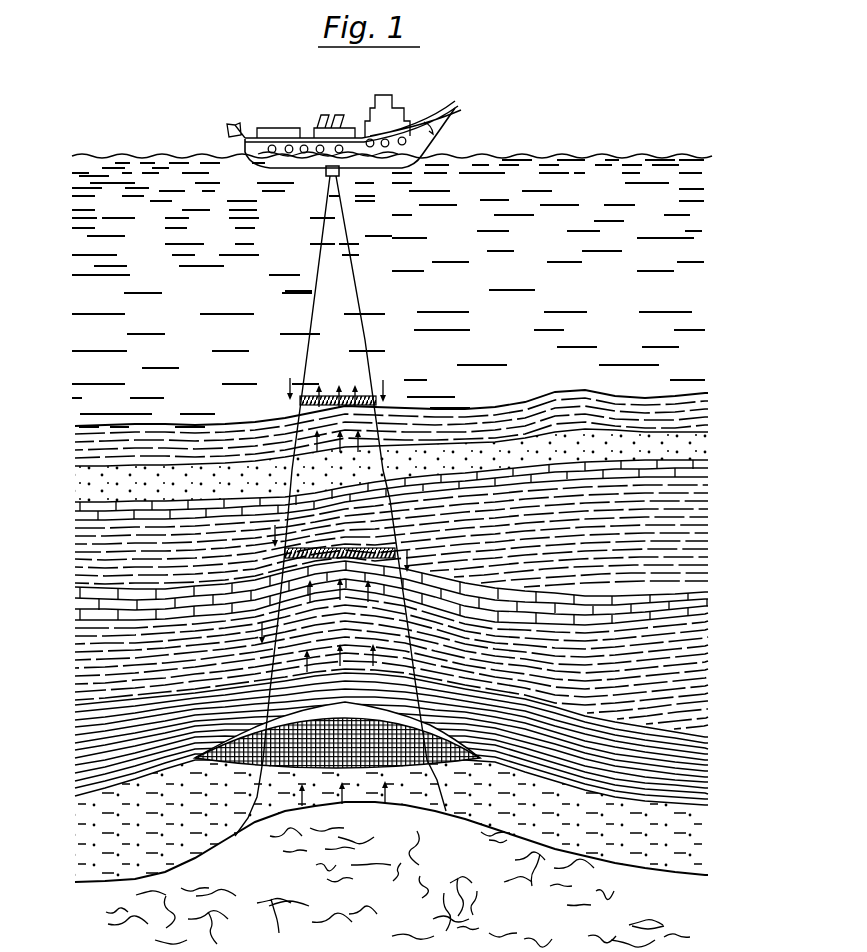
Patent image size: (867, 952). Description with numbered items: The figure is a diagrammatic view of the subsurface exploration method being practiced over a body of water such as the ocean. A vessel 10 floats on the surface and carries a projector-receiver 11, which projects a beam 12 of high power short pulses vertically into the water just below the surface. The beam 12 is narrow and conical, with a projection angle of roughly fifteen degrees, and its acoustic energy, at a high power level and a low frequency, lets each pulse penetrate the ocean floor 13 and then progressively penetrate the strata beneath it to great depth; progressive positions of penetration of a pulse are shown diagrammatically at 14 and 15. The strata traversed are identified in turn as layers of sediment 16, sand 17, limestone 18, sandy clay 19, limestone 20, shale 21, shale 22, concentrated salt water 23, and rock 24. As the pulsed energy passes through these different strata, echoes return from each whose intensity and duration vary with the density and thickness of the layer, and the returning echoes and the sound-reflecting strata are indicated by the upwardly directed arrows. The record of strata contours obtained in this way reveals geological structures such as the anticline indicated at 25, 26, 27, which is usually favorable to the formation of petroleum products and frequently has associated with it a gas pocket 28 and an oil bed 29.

The vessel 10 is at (445, 122).
The projector-receiver 11 is at (325, 174).
The beam 12 is at (348, 237).
The ocean floor 13 is at (602, 393).
The progressive position of penetration 14 is at (367, 396).
The progressive position of penetration 15 is at (388, 548).
The layer of sediment 16 is at (704, 411).
The layer of sand 17 is at (700, 450).
The layer of limestone 18 is at (700, 468).
The layer of sandy clay 19 is at (705, 533).
The layer of limestone 20 is at (705, 600).
The layer of shale 21 is at (703, 671).
The layer of shale 22 is at (410, 739).
The layer of concentrated salt water 23 is at (706, 838).
The rock 24 is at (704, 902).
The anticline 25 is at (180, 738).
The anticline 26 is at (375, 720).
The anticline 27 is at (720, 773).
The gas pocket 28 is at (346, 720).
The oil bed 29 is at (345, 751).